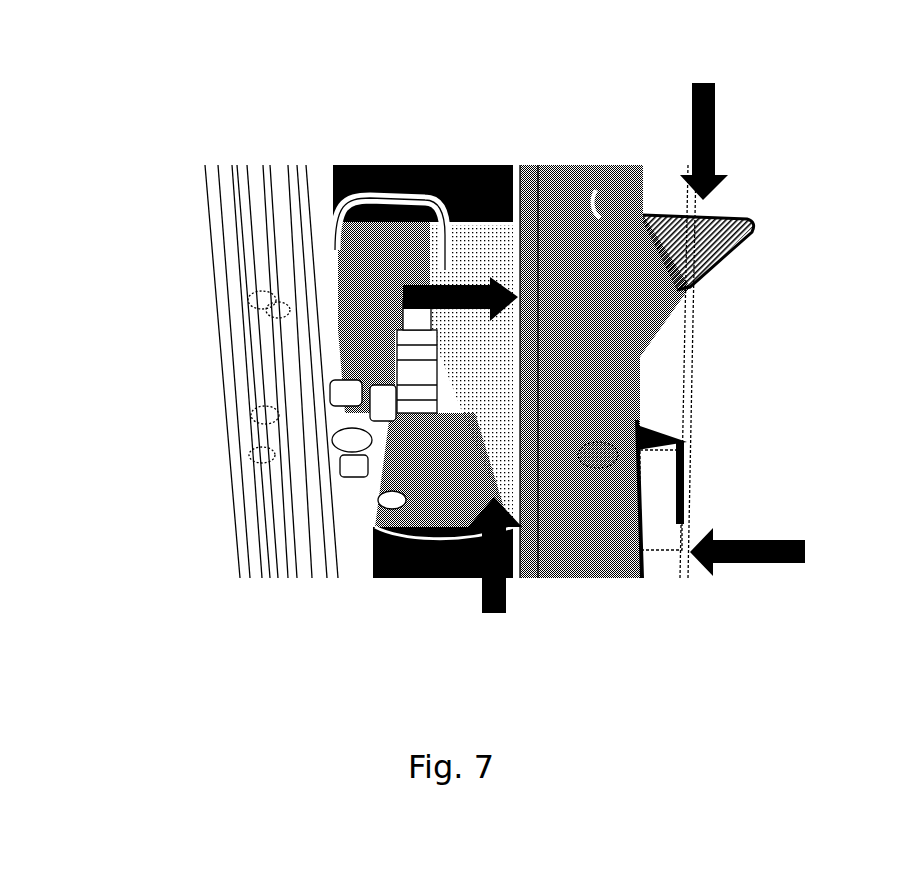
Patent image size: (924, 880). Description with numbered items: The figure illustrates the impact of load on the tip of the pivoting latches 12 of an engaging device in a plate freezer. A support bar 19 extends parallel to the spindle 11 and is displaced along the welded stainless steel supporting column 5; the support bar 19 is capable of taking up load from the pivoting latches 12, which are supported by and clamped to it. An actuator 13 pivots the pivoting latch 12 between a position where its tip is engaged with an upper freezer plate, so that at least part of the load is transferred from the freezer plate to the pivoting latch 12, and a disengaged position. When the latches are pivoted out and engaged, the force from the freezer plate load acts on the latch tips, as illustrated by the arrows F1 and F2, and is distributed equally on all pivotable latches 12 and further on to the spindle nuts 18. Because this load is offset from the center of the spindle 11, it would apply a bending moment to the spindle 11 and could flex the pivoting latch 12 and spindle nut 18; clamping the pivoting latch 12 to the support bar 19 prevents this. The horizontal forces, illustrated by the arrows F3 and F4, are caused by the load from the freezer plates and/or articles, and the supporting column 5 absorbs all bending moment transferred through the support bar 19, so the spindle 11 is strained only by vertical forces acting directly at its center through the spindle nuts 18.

The supporting column 5 is at (590, 238).
The spindle 11 is at (430, 193).
The pivoting latch 12 is at (490, 368).
The actuator 13 is at (402, 448).
The spindle nut 18 is at (598, 462).
The support bar 19 is at (592, 345).
The force arrow F1 is at (704, 116).
The force arrow F2 is at (495, 582).
The force arrow F3 is at (493, 299).
The force arrow F4 is at (788, 552).